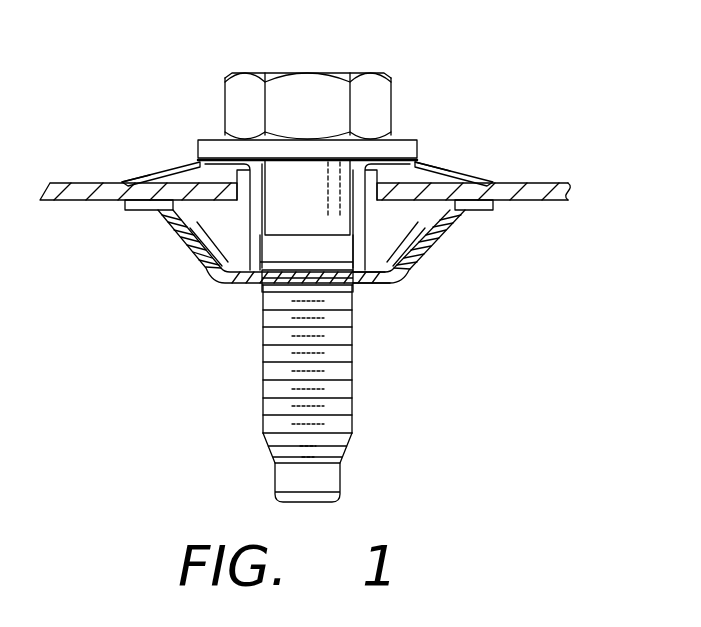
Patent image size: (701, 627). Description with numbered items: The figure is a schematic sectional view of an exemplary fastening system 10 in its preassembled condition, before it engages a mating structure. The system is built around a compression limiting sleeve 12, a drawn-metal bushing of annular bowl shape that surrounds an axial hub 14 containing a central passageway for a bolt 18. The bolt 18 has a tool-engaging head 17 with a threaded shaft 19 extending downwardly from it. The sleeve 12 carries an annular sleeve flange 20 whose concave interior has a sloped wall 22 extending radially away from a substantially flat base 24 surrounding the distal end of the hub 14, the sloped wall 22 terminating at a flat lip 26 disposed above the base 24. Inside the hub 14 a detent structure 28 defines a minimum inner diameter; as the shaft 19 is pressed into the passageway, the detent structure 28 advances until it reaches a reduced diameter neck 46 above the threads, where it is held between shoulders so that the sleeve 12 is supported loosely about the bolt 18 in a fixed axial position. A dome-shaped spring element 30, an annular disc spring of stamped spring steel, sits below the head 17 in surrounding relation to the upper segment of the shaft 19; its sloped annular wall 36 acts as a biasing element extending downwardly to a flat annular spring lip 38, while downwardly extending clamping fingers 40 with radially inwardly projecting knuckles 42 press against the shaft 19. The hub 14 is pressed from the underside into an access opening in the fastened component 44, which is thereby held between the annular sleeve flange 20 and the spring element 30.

The fastening system 10 is at (455, 84).
The compression limiting sleeve 12 is at (446, 242).
The axial hub 14 is at (230, 282).
The tool-engaging head 17 is at (355, 72).
The bolt 18 is at (312, 393).
The threaded shaft 19 is at (262, 390).
The annular sleeve flange 20 is at (173, 240).
The sloped wall 22 is at (200, 252).
The base 24 is at (385, 285).
The lip 26 is at (133, 212).
The detent structure 28 is at (290, 270).
The spring element 30 is at (439, 168).
The sloped annular wall 36 is at (185, 168).
The annular spring lip 38 is at (478, 180).
The clamping fingers 40 is at (265, 192).
The knuckles 42 is at (270, 202).
The fastened component 44 is at (540, 182).
The neck 46 is at (312, 255).